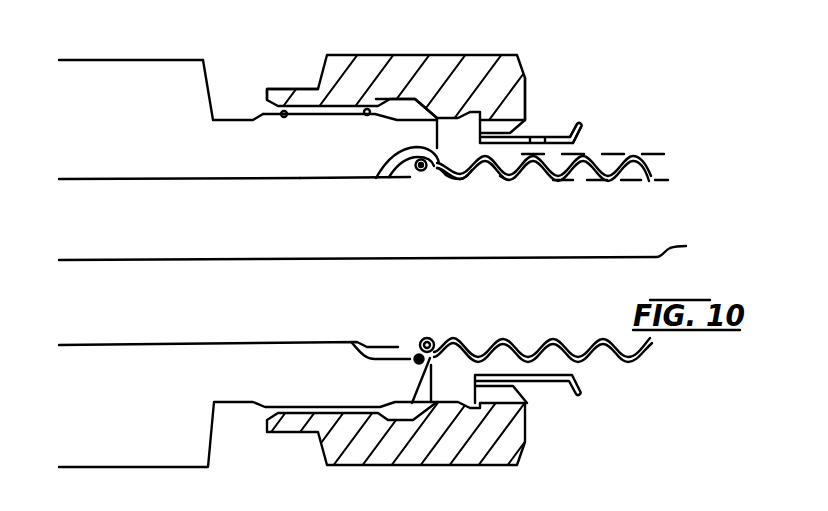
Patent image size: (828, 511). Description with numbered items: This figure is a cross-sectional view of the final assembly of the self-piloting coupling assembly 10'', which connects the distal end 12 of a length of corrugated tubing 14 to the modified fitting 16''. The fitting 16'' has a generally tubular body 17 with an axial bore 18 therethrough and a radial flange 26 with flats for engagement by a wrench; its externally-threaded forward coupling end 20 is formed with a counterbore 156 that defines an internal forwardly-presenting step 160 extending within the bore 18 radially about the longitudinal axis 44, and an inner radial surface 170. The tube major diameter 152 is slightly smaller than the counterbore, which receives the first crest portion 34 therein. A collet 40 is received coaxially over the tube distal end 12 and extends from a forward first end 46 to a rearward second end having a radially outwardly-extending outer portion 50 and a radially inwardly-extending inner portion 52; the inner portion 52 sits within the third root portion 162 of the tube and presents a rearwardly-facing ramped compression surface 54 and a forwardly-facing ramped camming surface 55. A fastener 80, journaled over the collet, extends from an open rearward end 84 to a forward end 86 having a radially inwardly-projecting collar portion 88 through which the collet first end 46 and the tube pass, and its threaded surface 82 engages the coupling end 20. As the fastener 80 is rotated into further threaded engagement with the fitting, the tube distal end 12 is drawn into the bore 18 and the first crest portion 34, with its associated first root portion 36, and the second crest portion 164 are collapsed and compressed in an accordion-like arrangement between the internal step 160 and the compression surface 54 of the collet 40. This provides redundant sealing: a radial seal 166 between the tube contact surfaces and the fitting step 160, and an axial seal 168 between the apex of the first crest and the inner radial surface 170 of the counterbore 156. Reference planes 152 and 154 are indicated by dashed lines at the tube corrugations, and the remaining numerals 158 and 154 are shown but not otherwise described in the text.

The coupling assembly 10'' is at (397, 137).
The modified fitting 16'' is at (248, 69).
The radial flange 26 is at (108, 60).
The tubular body 17 is at (222, 118).
The open rearward end 84 is at (262, 98).
The forward coupling end 20 is at (292, 89).
The fastener 80 is at (534, 46).
The outer portion 50 is at (453, 117).
The threading surface 82 is at (376, 99).
The forward end 86 is at (527, 80).
The collar portion 88 is at (527, 112).
The first end 46 is at (582, 128).
The collet 40 is at (596, 99).
The second crest portion 164 is at (376, 178).
The first crest portion 34 is at (392, 176).
The contact strip 158 is at (398, 172).
The distal end 12 is at (420, 171).
The corrugated tubing 14 is at (645, 147).
The first root portion 36 is at (433, 176).
The compression surface 54 is at (446, 176).
The inner portion 52 is at (461, 178).
The camming surface 55 is at (503, 171).
The tube major diameter 152 is at (658, 153).
The lower reference plane 154 is at (662, 180).
The axial bore 18 is at (152, 235).
The longitudinal axis 44 is at (388, 245).
The counterbore 156 is at (407, 327).
The radial seal 166 is at (399, 346).
The internal step 160 is at (375, 359).
The axial seal 168 is at (417, 366).
The third root portion 162 is at (471, 341).
The inner radial surface 170 is at (330, 466).